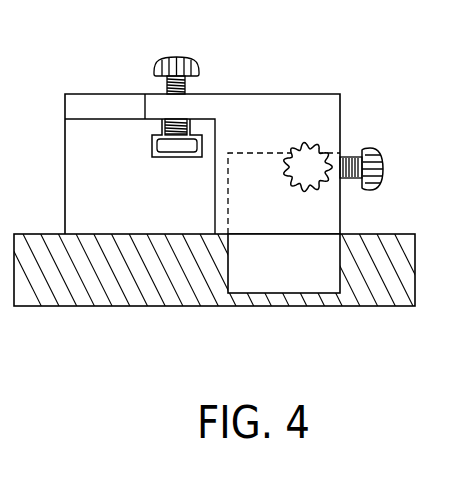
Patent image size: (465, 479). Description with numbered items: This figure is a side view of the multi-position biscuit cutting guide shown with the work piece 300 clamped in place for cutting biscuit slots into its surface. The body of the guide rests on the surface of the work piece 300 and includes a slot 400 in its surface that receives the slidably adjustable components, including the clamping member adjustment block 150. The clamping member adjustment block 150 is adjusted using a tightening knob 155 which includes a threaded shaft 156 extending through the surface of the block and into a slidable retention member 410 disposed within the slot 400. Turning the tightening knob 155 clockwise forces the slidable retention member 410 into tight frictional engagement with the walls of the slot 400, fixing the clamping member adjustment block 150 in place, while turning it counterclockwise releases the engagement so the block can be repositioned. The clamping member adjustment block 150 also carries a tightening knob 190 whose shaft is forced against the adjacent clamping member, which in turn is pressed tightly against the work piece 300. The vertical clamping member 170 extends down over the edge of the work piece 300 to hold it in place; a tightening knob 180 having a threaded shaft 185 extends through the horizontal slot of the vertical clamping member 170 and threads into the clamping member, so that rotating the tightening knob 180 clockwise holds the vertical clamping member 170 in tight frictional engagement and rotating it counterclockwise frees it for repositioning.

The clamping member adjustment block 150 is at (288, 95).
The tightening knob 155 is at (180, 57).
The threaded shaft 156 is at (187, 87).
The vertical clamping member 170 is at (263, 295).
The tightening knob 180 is at (370, 189).
The threaded shaft 185 is at (349, 157).
The tightening knob 190 is at (308, 143).
The work piece 300 is at (47, 306).
The slot 400 is at (152, 147).
The slidable retention member 410 is at (167, 157).